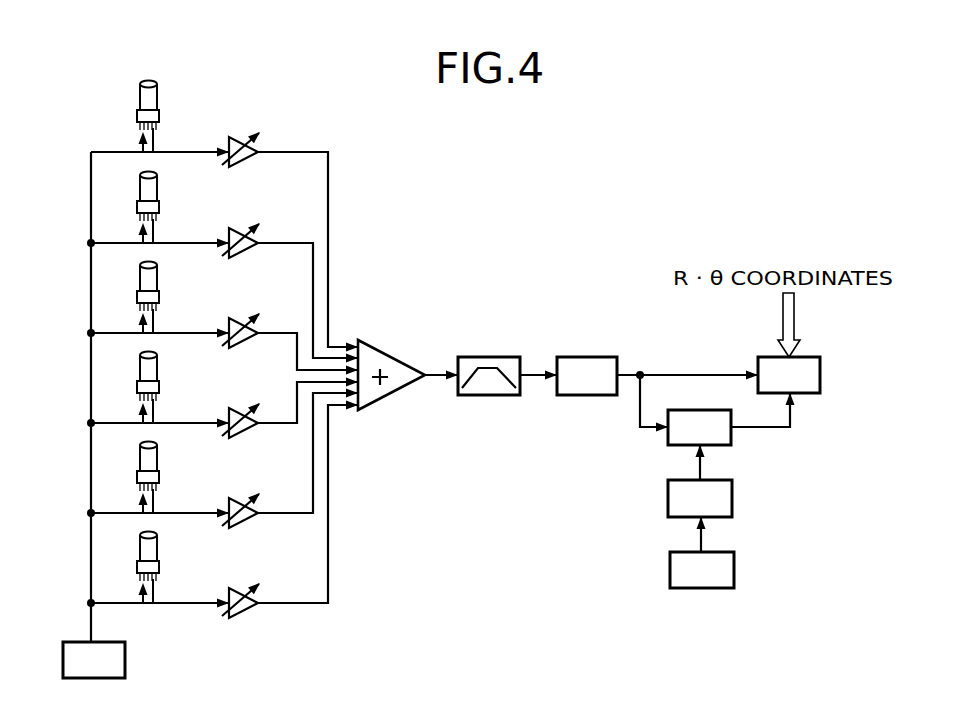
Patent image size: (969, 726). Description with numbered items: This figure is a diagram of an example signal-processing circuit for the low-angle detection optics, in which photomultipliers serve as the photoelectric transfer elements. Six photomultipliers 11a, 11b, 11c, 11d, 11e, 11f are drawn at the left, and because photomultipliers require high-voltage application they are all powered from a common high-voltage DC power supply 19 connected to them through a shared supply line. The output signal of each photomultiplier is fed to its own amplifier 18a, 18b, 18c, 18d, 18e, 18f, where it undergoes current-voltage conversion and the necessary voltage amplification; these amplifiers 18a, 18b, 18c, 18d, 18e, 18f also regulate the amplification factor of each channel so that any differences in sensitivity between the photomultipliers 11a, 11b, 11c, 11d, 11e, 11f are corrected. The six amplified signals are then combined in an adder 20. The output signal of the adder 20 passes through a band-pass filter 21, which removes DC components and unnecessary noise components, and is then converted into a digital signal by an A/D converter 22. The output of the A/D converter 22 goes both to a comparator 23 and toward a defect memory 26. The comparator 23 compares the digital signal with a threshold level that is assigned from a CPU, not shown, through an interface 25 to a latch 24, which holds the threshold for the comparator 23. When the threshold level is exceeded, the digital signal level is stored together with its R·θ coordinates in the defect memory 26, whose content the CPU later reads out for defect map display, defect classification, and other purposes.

The photomultiplier 11a is at (137, 116).
The photomultiplier 11b is at (137, 207).
The photomultiplier 11c is at (137, 297).
The photomultiplier 11d is at (137, 387).
The photomultiplier 11e is at (137, 477).
The photomultiplier 11f is at (137, 567).
The amplifier 18a is at (228, 142).
The amplifier 18b is at (228, 233).
The amplifier 18c is at (228, 323).
The amplifier 18d is at (228, 413).
The amplifier 18e is at (228, 503).
The amplifier 18f is at (228, 593).
The high-voltage DC power supply 19 is at (125, 658).
The adder 20 is at (395, 358).
The band-pass filter 21 is at (488, 357).
The A/D converter 22 is at (588, 357).
The comparator 23 is at (668, 440).
The latch 24 is at (668, 500).
The interface 25 is at (670, 570).
The defect memory 26 is at (813, 395).